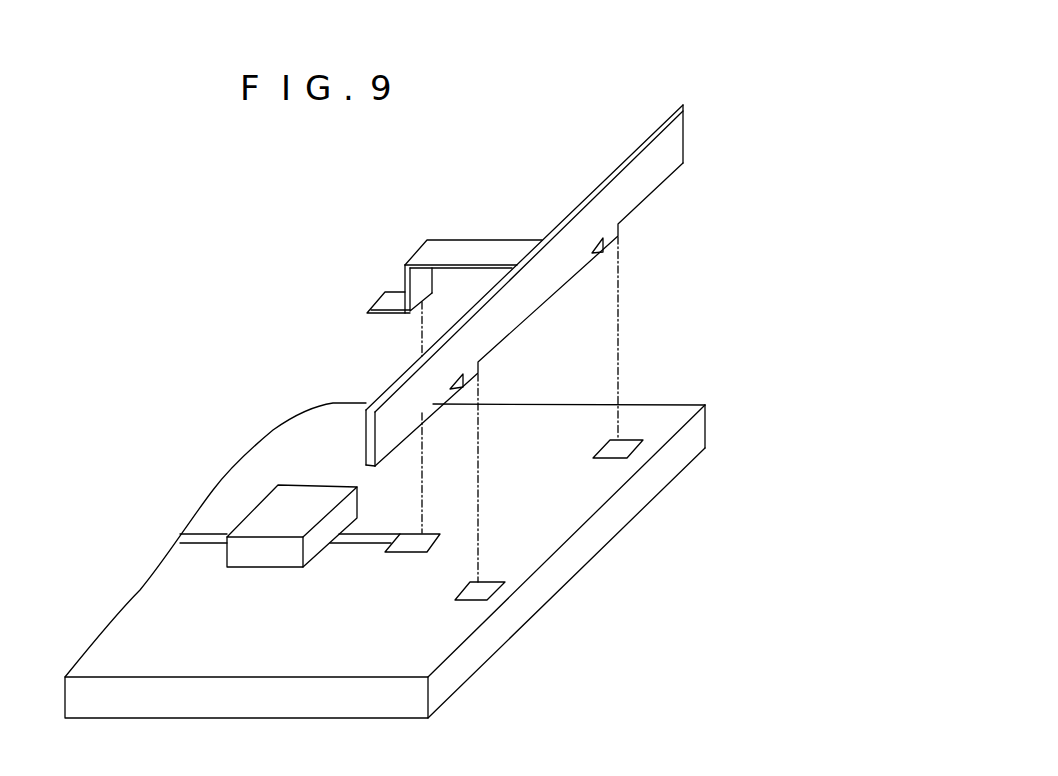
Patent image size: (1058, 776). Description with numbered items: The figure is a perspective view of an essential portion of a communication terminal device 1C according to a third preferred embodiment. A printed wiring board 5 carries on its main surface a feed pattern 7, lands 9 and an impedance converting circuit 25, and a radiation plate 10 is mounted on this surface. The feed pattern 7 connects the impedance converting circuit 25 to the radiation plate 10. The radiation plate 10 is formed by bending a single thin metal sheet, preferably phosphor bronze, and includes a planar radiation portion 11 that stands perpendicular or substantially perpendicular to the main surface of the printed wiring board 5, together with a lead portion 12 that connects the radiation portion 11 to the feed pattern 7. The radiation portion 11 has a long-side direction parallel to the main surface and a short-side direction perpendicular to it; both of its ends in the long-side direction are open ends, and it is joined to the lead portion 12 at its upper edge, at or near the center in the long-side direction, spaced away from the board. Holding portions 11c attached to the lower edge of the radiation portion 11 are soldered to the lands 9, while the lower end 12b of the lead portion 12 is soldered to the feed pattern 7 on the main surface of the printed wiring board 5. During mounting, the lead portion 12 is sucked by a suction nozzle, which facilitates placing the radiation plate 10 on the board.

The communication terminal device 1C is at (324, 195).
The printed wiring board 5 is at (667, 405).
The feed pattern 7 is at (350, 545).
The land 9 is at (462, 590).
The radiation plate 10 is at (585, 183).
The radiation portion 11 is at (551, 285).
The holding portion 11c is at (480, 362).
The lead portion 12 is at (454, 284).
The lower end 12b is at (385, 316).
The impedance converting circuit 25 is at (277, 494).